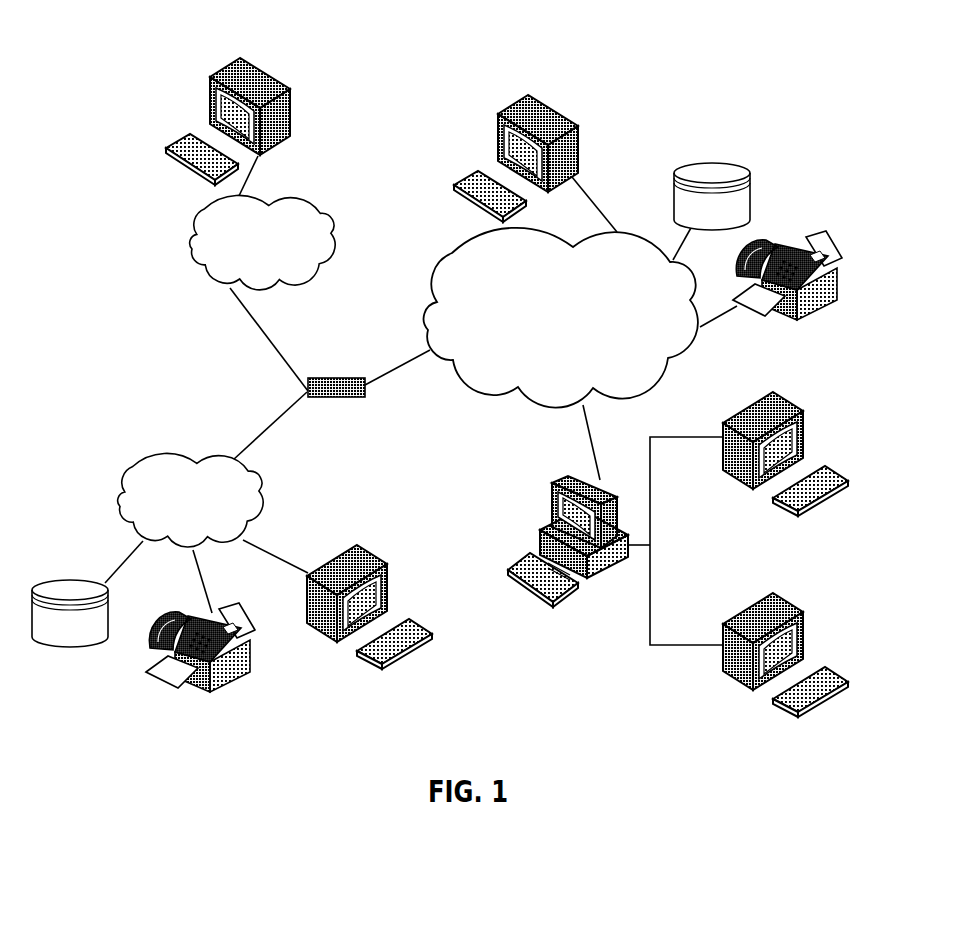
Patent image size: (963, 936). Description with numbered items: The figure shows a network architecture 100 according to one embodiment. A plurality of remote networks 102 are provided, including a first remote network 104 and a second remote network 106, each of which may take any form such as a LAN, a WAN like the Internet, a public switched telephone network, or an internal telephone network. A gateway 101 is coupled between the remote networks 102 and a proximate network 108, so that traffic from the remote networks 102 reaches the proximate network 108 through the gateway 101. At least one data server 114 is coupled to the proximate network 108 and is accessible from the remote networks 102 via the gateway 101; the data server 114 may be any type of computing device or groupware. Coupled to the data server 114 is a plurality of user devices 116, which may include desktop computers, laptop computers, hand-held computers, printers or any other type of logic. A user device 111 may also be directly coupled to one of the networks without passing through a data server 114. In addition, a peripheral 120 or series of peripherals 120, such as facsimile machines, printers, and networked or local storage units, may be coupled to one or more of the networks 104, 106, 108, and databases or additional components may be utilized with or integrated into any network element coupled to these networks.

The architecture 100 is at (144, 38).
The gateway 101 is at (318, 378).
The remote networks 102 is at (168, 307).
The first remote network 104 is at (123, 480).
The second remote network 106 is at (332, 222).
The proximate network 108 is at (662, 378).
The user device 111 is at (578, 128).
The data server 114 is at (552, 500).
The user devices 116 is at (290, 96).
The peripheral 120 is at (751, 172).